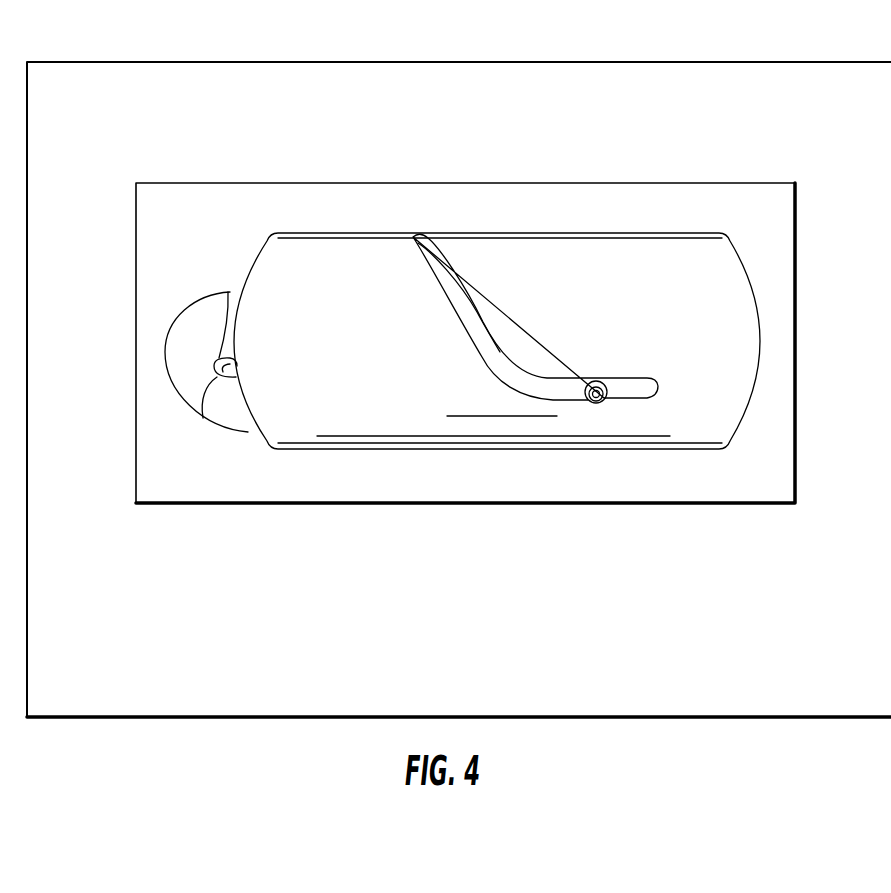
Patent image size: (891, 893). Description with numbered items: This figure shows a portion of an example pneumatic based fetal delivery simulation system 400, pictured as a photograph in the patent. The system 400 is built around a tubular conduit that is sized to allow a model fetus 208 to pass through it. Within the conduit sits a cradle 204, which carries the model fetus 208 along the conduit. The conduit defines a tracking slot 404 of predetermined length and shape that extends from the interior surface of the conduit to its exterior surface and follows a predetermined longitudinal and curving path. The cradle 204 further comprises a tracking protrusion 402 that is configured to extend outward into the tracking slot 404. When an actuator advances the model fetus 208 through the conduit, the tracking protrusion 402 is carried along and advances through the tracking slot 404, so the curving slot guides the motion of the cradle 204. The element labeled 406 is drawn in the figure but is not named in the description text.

The system 400 is at (648, 107).
The enclosure / capsule body 406 is at (637, 280).
The model fetus 208 is at (173, 308).
The cradle 204 is at (482, 360).
The tracking slot 404 is at (483, 301).
The tracking protrusion 402 is at (607, 402).